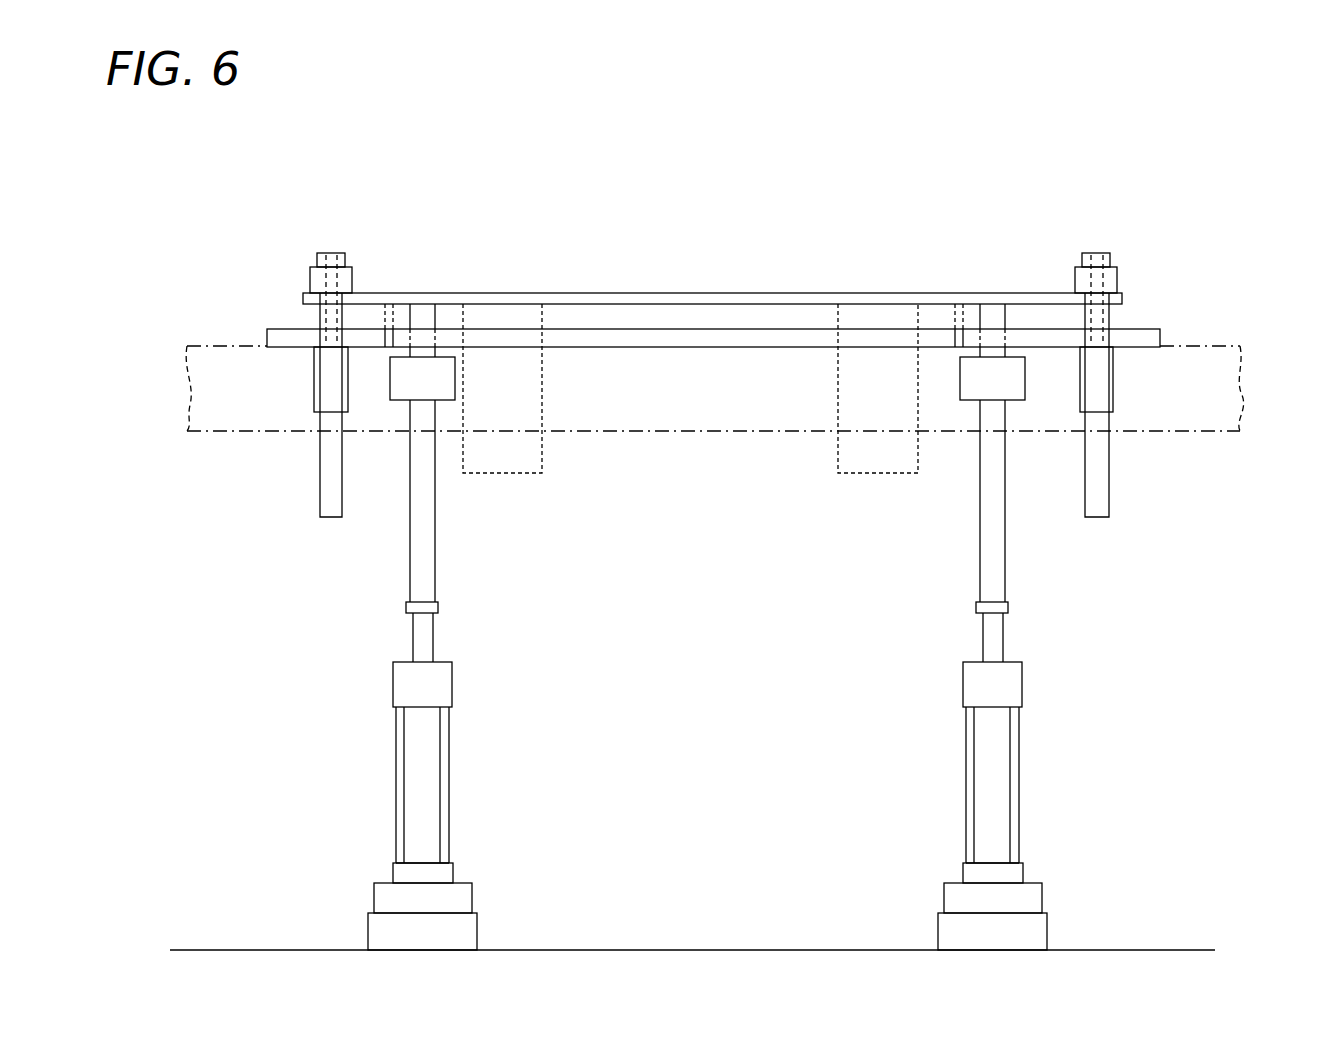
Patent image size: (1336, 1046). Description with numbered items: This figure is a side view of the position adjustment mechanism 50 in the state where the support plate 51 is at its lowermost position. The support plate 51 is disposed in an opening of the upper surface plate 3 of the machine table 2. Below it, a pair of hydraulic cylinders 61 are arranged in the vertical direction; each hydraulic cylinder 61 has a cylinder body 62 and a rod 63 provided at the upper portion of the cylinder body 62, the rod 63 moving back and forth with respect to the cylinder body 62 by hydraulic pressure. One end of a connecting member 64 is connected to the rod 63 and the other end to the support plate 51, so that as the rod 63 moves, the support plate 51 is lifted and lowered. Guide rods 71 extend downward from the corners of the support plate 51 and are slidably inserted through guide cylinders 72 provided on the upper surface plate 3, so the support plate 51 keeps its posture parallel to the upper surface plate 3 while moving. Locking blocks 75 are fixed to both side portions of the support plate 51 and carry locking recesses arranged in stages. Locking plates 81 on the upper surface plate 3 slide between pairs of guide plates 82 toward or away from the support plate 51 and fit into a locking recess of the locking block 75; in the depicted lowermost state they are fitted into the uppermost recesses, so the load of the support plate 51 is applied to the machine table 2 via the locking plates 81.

The machine table 2 is at (1208, 380).
The upper surface plate 3 is at (1212, 347).
The position adjustment mechanism 50 is at (904, 186).
The support plate 51 is at (798, 293).
The hydraulic cylinder 61 is at (468, 730).
The cylinder body 62 is at (424, 803).
The rod 63 is at (418, 627).
The connecting member 64 is at (423, 551).
The guide rod 71 is at (325, 468).
The guide cylinder 72 is at (317, 385).
The locking block 75 is at (486, 463).
The locking plate 81 is at (708, 332).
The guide plate 82 is at (392, 332).